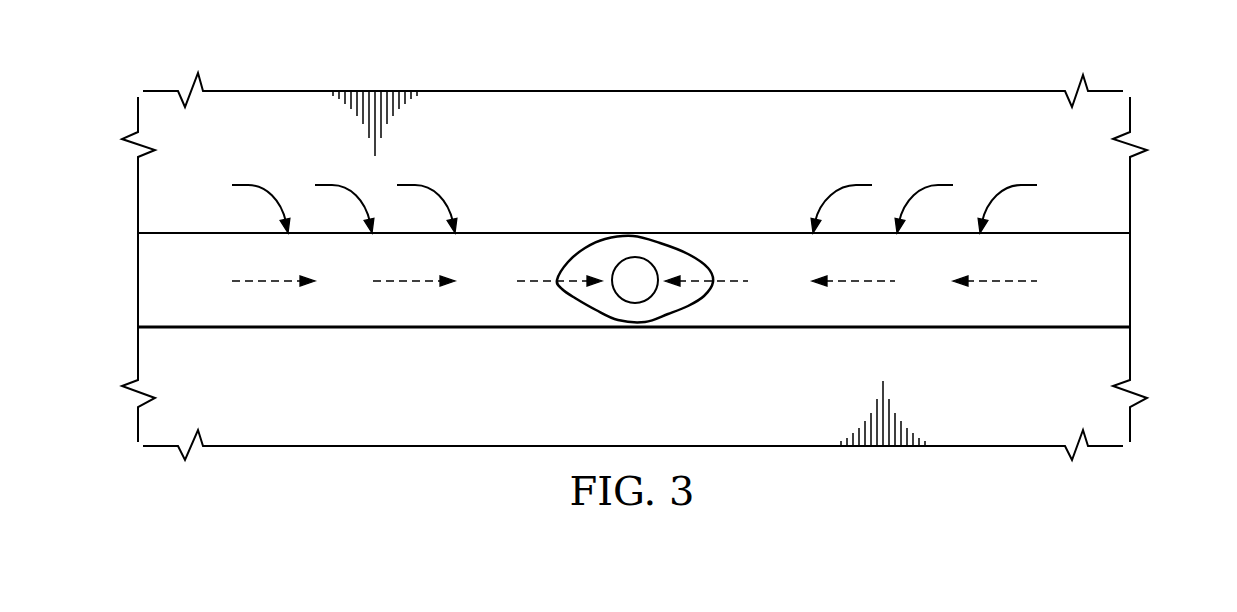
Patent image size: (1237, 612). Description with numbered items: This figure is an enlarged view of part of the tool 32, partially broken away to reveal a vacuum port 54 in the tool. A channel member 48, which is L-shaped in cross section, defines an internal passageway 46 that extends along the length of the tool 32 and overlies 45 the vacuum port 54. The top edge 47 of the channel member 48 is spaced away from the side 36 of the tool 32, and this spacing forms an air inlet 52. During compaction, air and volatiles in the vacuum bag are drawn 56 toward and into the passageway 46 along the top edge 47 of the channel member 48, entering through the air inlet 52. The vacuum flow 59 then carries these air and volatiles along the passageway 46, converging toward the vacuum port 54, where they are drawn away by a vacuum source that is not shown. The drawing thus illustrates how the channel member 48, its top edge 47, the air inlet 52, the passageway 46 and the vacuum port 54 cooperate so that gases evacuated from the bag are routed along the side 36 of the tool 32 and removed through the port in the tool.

The tool 32 is at (611, 106).
The side of the tool 36 is at (1120, 195).
The overlying relationship 45 is at (597, 306).
The internal passageway 46 is at (156, 261).
The top edge 47 is at (548, 232).
The channel member 48 is at (1120, 282).
The air inlet 52 is at (610, 233).
The vacuum port 54 is at (637, 295).
The drawing of air and volatiles 56 is at (248, 185).
The vacuum flow 59 is at (267, 281).